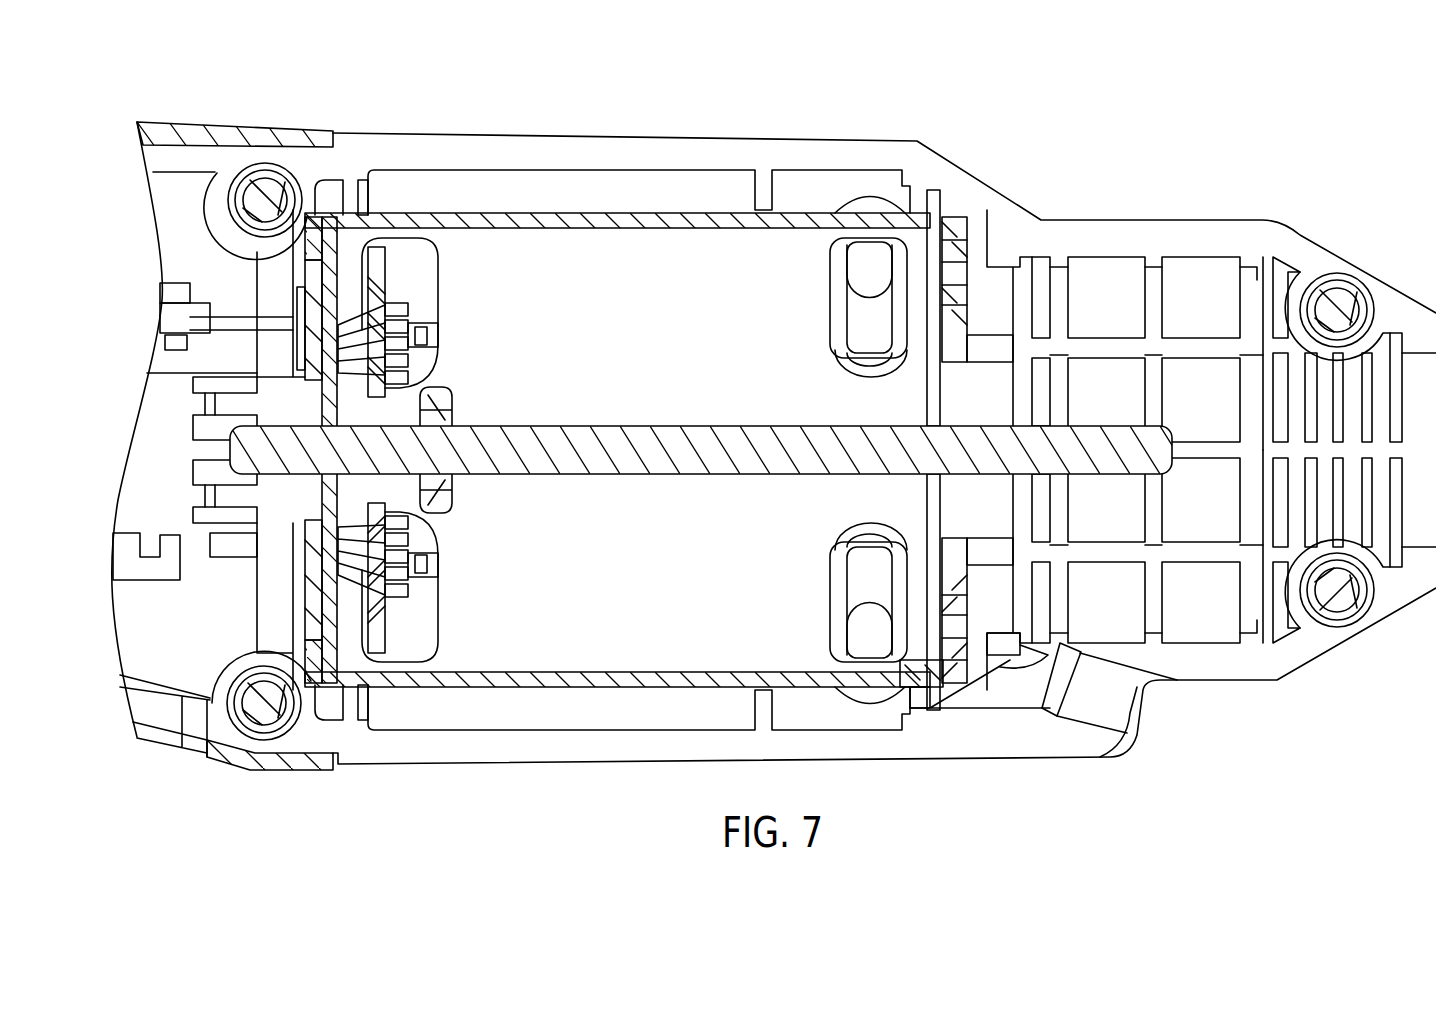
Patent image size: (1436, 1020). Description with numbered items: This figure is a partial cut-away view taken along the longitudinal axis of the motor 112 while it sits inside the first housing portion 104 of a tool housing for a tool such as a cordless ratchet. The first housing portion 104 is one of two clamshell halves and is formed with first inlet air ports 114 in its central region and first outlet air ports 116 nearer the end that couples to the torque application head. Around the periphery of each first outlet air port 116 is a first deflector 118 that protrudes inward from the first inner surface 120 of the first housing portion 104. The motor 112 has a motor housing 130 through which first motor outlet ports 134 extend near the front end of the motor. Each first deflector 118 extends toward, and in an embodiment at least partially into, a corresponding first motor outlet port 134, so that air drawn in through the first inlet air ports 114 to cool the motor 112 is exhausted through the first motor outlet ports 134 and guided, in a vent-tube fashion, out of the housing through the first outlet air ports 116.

The first housing portion 104 is at (835, 150).
The motor 112 is at (592, 242).
The first inlet air ports 114 is at (203, 423).
The first outlet air ports 116 is at (863, 253).
The first deflectors 118 is at (897, 273).
The first inner surface 120 is at (683, 183).
The motor housing 130 is at (692, 227).
The first motor outlet ports 134 is at (855, 366).